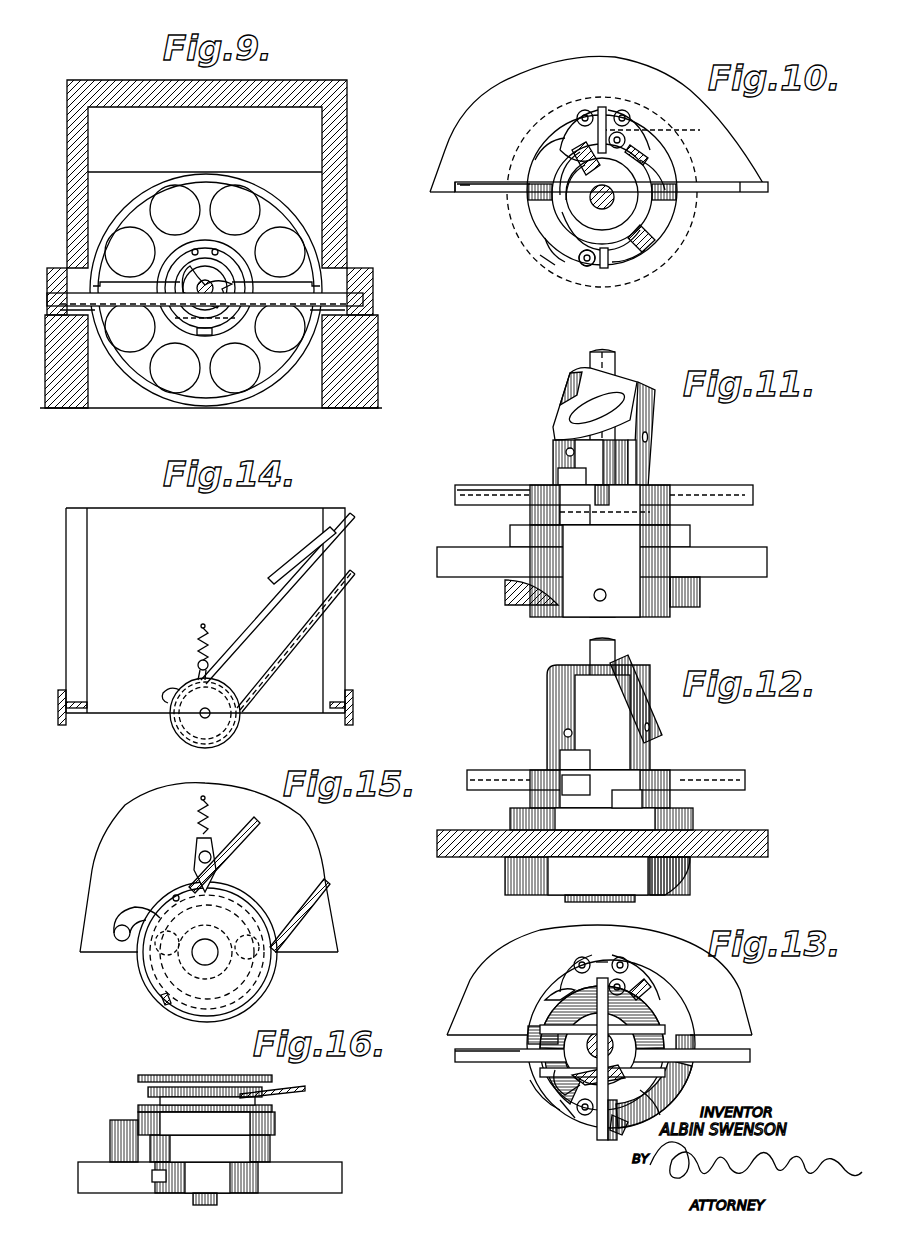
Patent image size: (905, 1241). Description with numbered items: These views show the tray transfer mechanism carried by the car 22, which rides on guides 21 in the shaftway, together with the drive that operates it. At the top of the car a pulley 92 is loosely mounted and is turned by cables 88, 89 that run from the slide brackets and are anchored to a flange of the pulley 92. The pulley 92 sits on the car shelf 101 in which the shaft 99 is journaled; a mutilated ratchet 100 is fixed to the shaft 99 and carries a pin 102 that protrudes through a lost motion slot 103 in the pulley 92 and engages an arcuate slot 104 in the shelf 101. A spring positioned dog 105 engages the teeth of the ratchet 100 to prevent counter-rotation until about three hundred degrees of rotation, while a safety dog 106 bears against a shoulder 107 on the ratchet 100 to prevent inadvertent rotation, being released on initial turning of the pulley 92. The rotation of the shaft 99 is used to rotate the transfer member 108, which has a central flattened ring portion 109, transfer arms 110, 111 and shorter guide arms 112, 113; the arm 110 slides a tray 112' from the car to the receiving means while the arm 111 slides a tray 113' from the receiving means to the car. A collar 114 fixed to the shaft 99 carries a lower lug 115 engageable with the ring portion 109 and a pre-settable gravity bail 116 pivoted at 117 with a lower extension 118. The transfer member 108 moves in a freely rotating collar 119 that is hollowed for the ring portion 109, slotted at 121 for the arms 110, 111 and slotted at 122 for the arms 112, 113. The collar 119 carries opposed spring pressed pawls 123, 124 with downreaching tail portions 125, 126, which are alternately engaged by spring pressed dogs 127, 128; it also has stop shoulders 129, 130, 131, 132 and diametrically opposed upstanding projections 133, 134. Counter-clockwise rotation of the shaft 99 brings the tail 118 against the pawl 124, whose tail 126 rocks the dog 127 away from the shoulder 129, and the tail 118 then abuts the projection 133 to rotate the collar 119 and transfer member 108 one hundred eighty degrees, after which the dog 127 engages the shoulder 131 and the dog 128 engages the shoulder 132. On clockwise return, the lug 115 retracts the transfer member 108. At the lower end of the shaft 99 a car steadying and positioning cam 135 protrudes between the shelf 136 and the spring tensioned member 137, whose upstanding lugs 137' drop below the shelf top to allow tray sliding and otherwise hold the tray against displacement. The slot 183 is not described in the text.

In FIG. 9, the guides 21 is at (57, 270).
In FIG. 14, the guides 21 is at (353, 708).
In FIG. 9, the car 22 is at (340, 152).
In FIG. 10, the car 22 is at (760, 165).
In FIG. 11, the car 22 is at (768, 560).
In FIG. 12, the car 22 is at (770, 843).
In FIG. 13, the car 22 is at (470, 1000).
In FIG. 14, the car 22 is at (345, 645).
In FIG. 14, the cable 88 is at (268, 608).
In FIG. 15, the cable 88 is at (250, 824).
In FIG. 14, the cable 89 is at (276, 672).
In FIG. 15, the cable 89 is at (322, 890).
In FIG. 16, the cable 89 is at (307, 1089).
In FIG. 14, the pulley 92 is at (215, 700).
In FIG. 15, the pulley 92 is at (255, 912).
In FIG. 16, the pulley 92 is at (215, 1077).
In FIG. 9, the shaft 99 is at (212, 284).
In FIG. 10, the shaft 99 is at (616, 200).
In FIG. 11, the shaft 99 is at (615, 356).
In FIG. 12, the shaft 99 is at (590, 648).
In FIG. 13, the shaft 99 is at (612, 1030).
In FIG. 14, the shaft 99 is at (205, 719).
In FIG. 15, the shaft 99 is at (209, 949).
In FIG. 16, the shaft 99 is at (195, 1200).
In FIG. 15, the mutilated ratchet 100 is at (270, 993).
In FIG. 16, the mutilated ratchet 100 is at (268, 1150).
In FIG. 14, the car shelf 101 is at (108, 708).
In FIG. 15, the car shelf 101 is at (340, 940).
In FIG. 16, the car shelf 101 is at (342, 1170).
In FIG. 15, the pin 102 is at (140, 955).
In FIG. 16, the pin 102 is at (158, 1176).
In FIG. 15, the lost motion slot 103 is at (162, 1000).
In FIG. 16, the lost motion slot 103 is at (175, 1125).
In FIG. 15, the arcuate slot 104 is at (275, 965).
In FIG. 16, the arcuate slot 104 is at (247, 1185).
In FIG. 14, the spring positioned dog 105 is at (198, 665).
In FIG. 15, the spring positioned dog 105 is at (195, 870).
In FIG. 14, the safety dog 106 is at (165, 690).
In FIG. 15, the safety dog 106 is at (128, 922).
In FIG. 16, the safety dog 106 is at (118, 1135).
In FIG. 15, the shoulder 107 is at (175, 895).
In FIG. 13, the transfer member 108 is at (558, 1085).
In FIG. 13, the flattened ring portion 109 is at (660, 1042).
In FIG. 9, the transfer arm 110 is at (300, 290).
In FIG. 10, the transfer arm 110 is at (735, 192).
In FIG. 11, the transfer arm 110 is at (755, 494).
In FIG. 12, the transfer arm 110 is at (606, 780).
In FIG. 13, the transfer arm 110 is at (456, 1055).
In FIG. 9, the transfer arm 111 is at (120, 306).
In FIG. 10, the transfer arm 111 is at (472, 192).
In FIG. 11, the transfer arm 111 is at (462, 488).
In FIG. 13, the transfer arm 111 is at (750, 1055).
In FIG. 10, the guide arm 112 is at (614, 110).
In FIG. 13, the guide arm 112 is at (581, 1060).
In FIG. 9, the tray 112' is at (205, 266).
In FIG. 10, the guide arm 113 is at (632, 268).
In FIG. 12, the guide arm 113 is at (648, 766).
In FIG. 13, the guide arm 113 is at (592, 955).
In FIG. 9, the tray 113' is at (206, 290).
In FIG. 9, the collar 114 is at (242, 298).
In FIG. 10, the collar 114 is at (565, 235).
In FIG. 11, the collar 114 is at (553, 448).
In FIG. 12, the collar 114 is at (556, 726).
In FIG. 10, the lug 115 is at (685, 173).
In FIG. 13, the lug 115 is at (648, 1072).
In FIG. 9, the gravity bail 116 is at (183, 280).
In FIG. 10, the gravity bail 116 is at (572, 218).
In FIG. 11, the gravity bail 116 is at (572, 386).
In FIG. 12, the gravity bail 116 is at (625, 668).
In FIG. 11, the pivot 117 is at (650, 436).
In FIG. 10, the lower extension 118 is at (635, 256).
In FIG. 11, the lower extension 118 is at (640, 473).
In FIG. 10, the collar 119 is at (672, 226).
In FIG. 11, the collar 119 is at (675, 520).
In FIG. 12, the collar 119 is at (675, 806).
In FIG. 13, the collar 119 is at (545, 1020).
In FIG. 10, the slot 121 is at (570, 196).
In FIG. 13, the slot 121 is at (538, 1047).
In FIG. 10, the slot 122 is at (584, 110).
In FIG. 10, the spring pressed pawl 123 is at (583, 268).
In FIG. 13, the spring pressed pawl 123 is at (640, 990).
In FIG. 10, the spring pressed pawl 124 is at (628, 112).
In FIG. 12, the spring pressed pawl 124 is at (568, 757).
In FIG. 13, the spring pressed pawl 124 is at (572, 1110).
In FIG. 11, the tail portion 125 is at (560, 512).
In FIG. 12, the tail portion 126 is at (565, 790).
In FIG. 10, the spring pressed dog 127 is at (628, 136).
In FIG. 12, the spring pressed dog 127 is at (568, 800).
In FIG. 13, the spring pressed dog 127 is at (620, 980).
In FIG. 10, the spring pressed dog 128 is at (565, 135).
In FIG. 12, the spring pressed dog 128 is at (622, 800).
In FIG. 13, the spring pressed dog 128 is at (572, 965).
In FIG. 10, the stop shoulder 129 is at (660, 165).
In FIG. 13, the stop shoulder 129 is at (545, 1110).
In FIG. 10, the stop shoulder 130 is at (540, 152).
In FIG. 13, the stop shoulder 130 is at (650, 1095).
In FIG. 10, the stop shoulder 131 is at (560, 262).
In FIG. 13, the stop shoulder 131 is at (640, 1000).
In FIG. 10, the stop shoulder 132 is at (645, 243).
In FIG. 13, the stop shoulder 132 is at (560, 990).
In FIG. 10, the upstanding projection 133 is at (650, 152).
In FIG. 13, the upstanding projection 133 is at (562, 1116).
In FIG. 10, the upstanding projection 134 is at (556, 270).
In FIG. 13, the upstanding projection 134 is at (700, 1010).
In FIG. 10, the car steadying and positioning cam 135 is at (522, 137).
In FIG. 11, the car steadying and positioning cam 135 is at (530, 595).
In FIG. 12, the car steadying and positioning cam 135 is at (688, 877).
In FIG. 13, the car steadying and positioning cam 135 is at (612, 1135).
In FIG. 9, the shelf 136 is at (125, 408).
In FIG. 9, the member 137 is at (213, 343).
In FIG. 9, the upstanding lugs 137' is at (221, 330).
In FIG. 11, the slot 183 is at (560, 476).